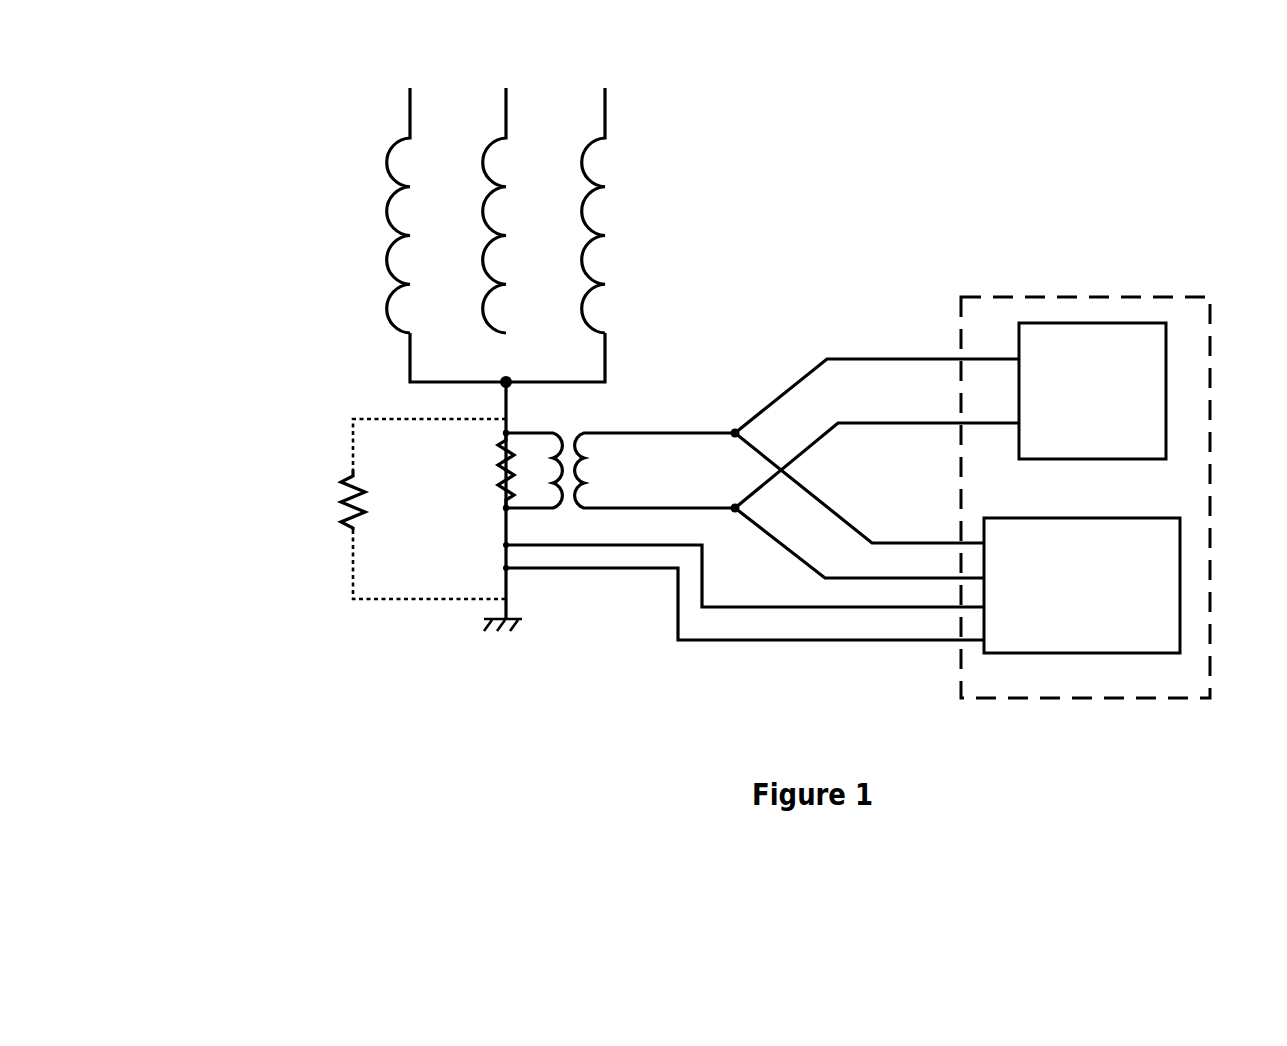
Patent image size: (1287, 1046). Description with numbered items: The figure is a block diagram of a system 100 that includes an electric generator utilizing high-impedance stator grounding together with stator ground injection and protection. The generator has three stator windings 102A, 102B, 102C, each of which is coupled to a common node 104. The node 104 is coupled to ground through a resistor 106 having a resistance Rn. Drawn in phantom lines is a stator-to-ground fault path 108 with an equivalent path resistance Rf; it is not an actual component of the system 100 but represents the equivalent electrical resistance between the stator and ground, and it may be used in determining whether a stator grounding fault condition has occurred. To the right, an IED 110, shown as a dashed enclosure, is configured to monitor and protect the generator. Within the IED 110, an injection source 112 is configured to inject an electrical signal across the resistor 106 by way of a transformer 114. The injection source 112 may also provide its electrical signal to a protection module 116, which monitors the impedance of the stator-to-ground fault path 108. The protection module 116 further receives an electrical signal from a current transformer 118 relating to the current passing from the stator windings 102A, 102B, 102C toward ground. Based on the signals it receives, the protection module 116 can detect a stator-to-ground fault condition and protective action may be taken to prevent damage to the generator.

The system 100 is at (1177, 97).
The stator winding 102A is at (410, 100).
The stator winding 102B is at (506, 125).
The stator winding 102C is at (605, 118).
The node 104 is at (500, 383).
The resistor 106 is at (448, 468).
The stator-to-ground fault path 108 is at (345, 517).
The IED 110 is at (1087, 297).
The injection source 112 is at (1069, 440).
The transformer 114 is at (588, 452).
The protection module 116 is at (1059, 633).
The current transformer 118 is at (497, 575).